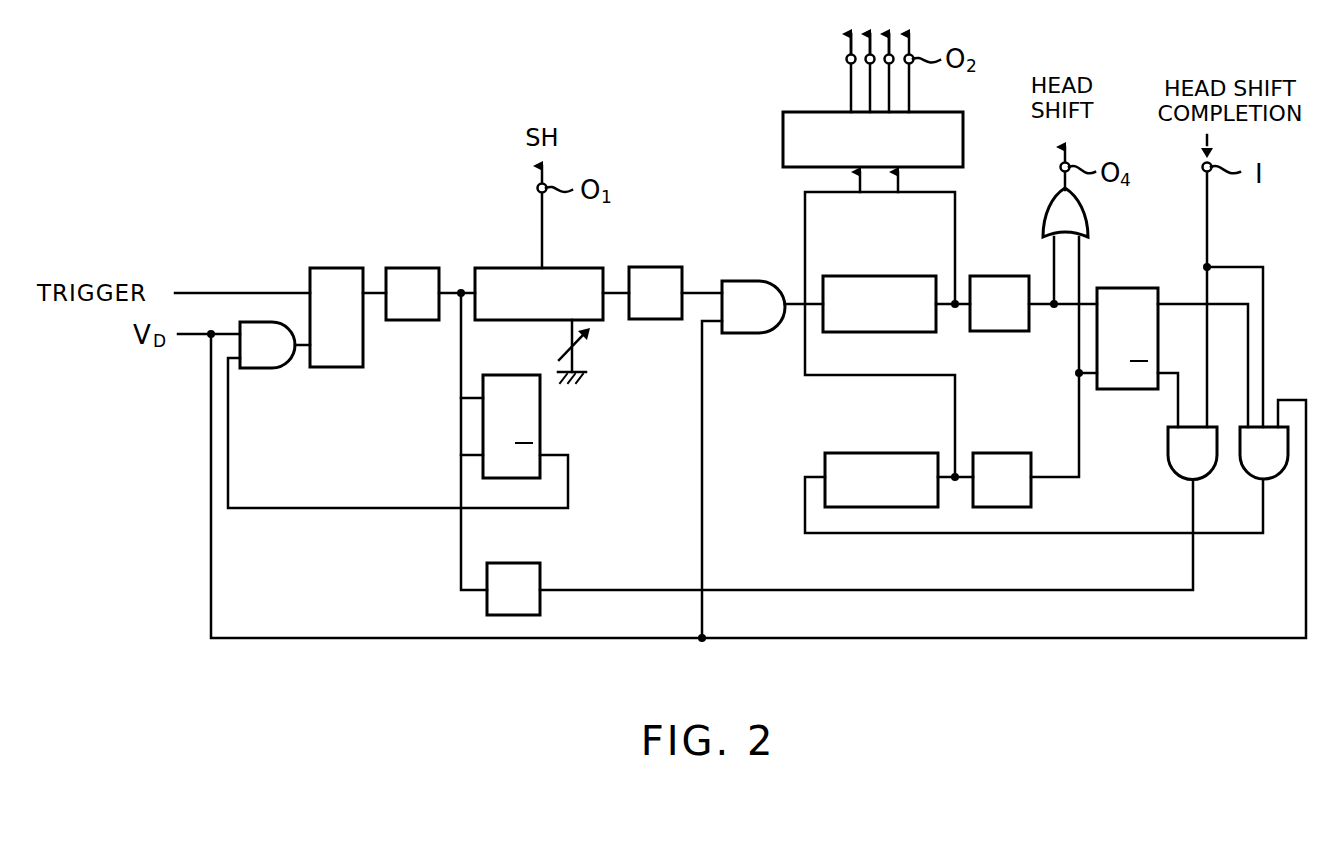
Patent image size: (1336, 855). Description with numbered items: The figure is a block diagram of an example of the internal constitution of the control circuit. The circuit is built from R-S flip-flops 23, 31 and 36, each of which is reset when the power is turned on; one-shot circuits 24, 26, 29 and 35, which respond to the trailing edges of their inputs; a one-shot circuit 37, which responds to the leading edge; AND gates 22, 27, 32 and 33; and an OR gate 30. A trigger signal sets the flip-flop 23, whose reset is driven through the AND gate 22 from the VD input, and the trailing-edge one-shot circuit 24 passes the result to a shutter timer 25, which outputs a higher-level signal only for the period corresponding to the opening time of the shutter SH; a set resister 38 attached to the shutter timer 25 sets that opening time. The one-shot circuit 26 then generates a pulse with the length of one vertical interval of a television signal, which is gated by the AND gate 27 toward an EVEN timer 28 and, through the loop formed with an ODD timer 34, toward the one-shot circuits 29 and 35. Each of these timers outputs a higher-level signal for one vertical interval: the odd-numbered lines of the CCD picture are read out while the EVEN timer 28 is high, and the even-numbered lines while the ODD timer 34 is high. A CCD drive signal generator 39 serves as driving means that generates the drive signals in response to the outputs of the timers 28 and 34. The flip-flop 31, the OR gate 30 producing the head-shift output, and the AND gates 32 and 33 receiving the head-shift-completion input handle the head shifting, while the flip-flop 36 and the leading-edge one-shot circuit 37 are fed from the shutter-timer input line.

The AND gate 22 is at (282, 369).
The R-S flip-flop 23 is at (335, 266).
The one-shot circuit 24 is at (415, 266).
The shutter timer 25 is at (512, 266).
The one-shot circuit 26 is at (655, 265).
The AND gate 27 is at (752, 279).
The EVEN timer 28 is at (880, 274).
The one-shot circuit 29 is at (992, 274).
The OR gate 30 is at (1086, 205).
The R-S flip-flop 31 is at (1130, 286).
The AND gate 32 is at (1168, 470).
The AND gate 33 is at (1242, 468).
The ODD timer 34 is at (882, 451).
The one-shot circuit 35 is at (1000, 451).
The R-S flip-flop 36 is at (540, 423).
The one-shot circuit 37 is at (540, 573).
The set resister 38 is at (590, 348).
The CCD drive signal generator 39 is at (783, 140).